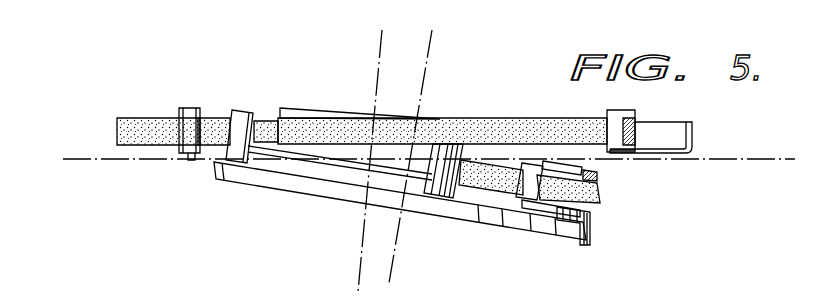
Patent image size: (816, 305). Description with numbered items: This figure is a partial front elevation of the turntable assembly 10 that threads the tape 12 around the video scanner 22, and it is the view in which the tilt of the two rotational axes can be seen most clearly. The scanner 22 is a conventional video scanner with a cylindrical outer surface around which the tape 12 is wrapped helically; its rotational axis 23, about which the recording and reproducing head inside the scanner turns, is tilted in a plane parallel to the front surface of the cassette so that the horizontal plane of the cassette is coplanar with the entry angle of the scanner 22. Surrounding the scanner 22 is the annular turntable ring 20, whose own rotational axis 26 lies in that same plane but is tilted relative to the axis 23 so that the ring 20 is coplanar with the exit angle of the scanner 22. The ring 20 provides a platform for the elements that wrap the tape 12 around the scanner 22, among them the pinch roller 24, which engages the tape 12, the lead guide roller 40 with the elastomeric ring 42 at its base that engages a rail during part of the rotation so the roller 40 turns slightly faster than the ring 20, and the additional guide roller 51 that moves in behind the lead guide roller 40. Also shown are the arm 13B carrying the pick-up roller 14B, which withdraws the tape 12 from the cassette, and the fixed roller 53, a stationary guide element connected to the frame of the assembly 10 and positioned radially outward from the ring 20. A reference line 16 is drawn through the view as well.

The assembly 10 is at (462, 106).
The tape 12 is at (513, 123).
The arm 13B is at (675, 135).
The pick-up roller 14B is at (618, 117).
The reference base line 16 is at (78, 159).
The turntable ring 20 is at (288, 183).
The video scanner 22 is at (360, 168).
The rotational axis of scanner 23 is at (377, 73).
The pinch roller 24 is at (525, 193).
The rotational axis of turntable ring 26 is at (430, 73).
The lead guide roller 40 is at (573, 173).
The elastomeric ring 42 is at (563, 210).
The guide roller 51 is at (243, 116).
The fixed roller 53 is at (185, 110).